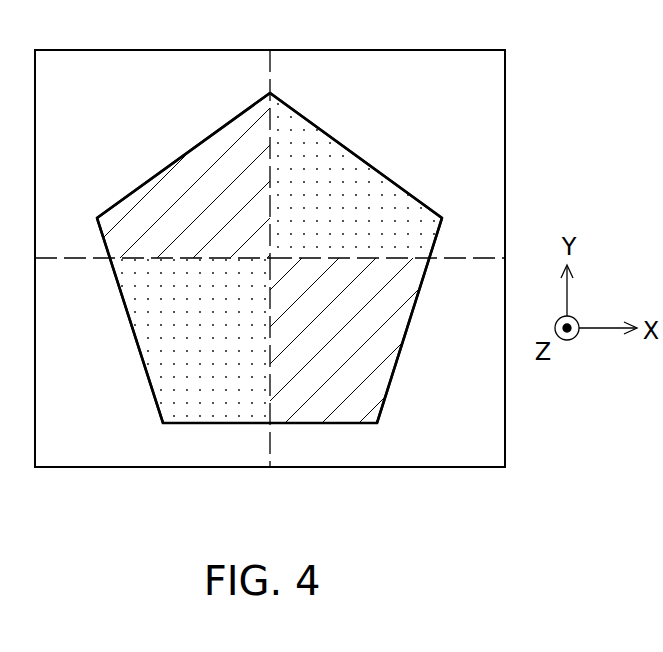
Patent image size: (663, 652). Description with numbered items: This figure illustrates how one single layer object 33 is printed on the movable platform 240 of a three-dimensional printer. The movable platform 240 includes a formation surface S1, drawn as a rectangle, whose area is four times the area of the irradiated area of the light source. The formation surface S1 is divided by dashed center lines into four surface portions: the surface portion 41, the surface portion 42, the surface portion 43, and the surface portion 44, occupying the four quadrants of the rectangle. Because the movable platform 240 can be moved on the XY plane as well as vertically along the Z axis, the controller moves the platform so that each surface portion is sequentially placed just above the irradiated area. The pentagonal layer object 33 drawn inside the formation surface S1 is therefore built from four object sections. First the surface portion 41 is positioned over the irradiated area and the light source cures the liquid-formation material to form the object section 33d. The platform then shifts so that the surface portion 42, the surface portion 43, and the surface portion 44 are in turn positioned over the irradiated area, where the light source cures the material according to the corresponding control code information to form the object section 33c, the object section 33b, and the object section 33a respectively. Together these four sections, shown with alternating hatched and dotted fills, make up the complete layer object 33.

The movable platform 240 is at (424, 49).
The surface portion 41 is at (310, 65).
The surface portion 42 is at (76, 65).
The surface portion 43 is at (80, 452).
The surface portion 44 is at (311, 452).
The layer object 33 is at (373, 165).
The object section 33a is at (104, 236).
The object section 33b is at (143, 363).
The object section 33c is at (400, 358).
The object section 33d is at (432, 231).
The formation surface S1 is at (460, 128).